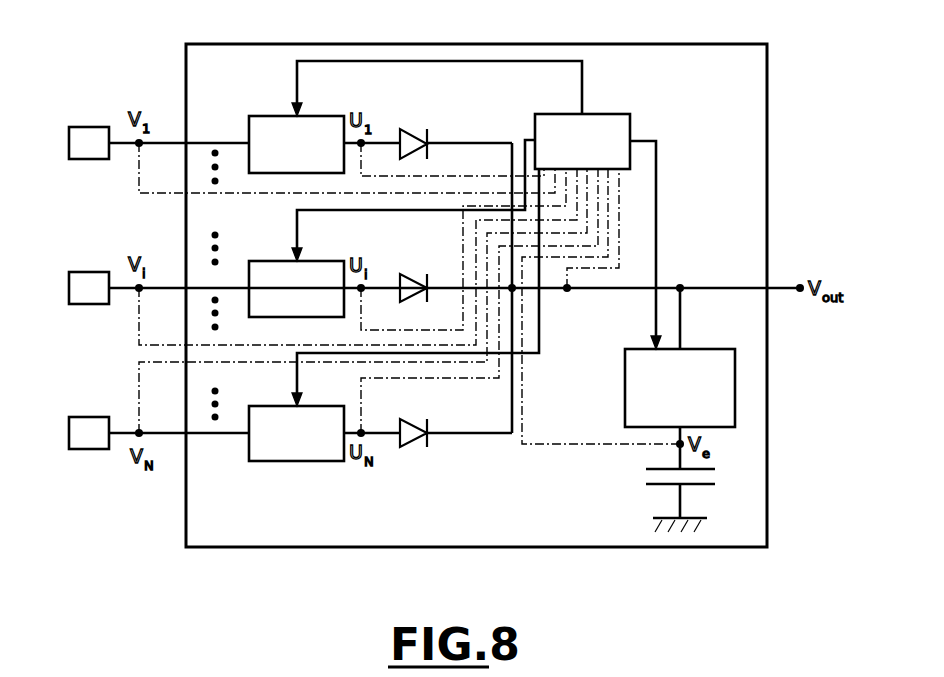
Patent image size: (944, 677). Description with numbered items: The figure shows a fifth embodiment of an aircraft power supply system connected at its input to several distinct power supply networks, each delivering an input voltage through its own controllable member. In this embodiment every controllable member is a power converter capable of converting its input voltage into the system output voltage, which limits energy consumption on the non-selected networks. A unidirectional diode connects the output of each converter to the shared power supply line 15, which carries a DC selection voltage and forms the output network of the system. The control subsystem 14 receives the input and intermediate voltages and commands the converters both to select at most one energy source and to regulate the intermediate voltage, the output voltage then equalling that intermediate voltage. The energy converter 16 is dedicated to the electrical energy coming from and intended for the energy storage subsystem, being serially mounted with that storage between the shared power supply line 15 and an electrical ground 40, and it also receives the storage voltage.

The control subsystem 14 is at (634, 122).
The shared power supply line 15 is at (599, 292).
The energy converter 16 is at (737, 393).
The electrical ground 40 is at (693, 518).